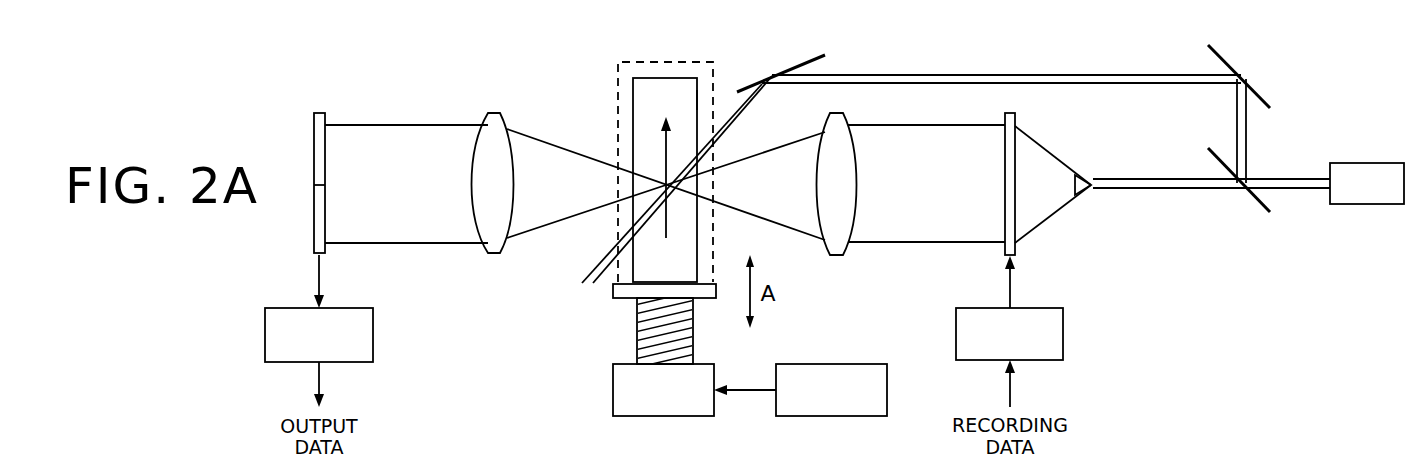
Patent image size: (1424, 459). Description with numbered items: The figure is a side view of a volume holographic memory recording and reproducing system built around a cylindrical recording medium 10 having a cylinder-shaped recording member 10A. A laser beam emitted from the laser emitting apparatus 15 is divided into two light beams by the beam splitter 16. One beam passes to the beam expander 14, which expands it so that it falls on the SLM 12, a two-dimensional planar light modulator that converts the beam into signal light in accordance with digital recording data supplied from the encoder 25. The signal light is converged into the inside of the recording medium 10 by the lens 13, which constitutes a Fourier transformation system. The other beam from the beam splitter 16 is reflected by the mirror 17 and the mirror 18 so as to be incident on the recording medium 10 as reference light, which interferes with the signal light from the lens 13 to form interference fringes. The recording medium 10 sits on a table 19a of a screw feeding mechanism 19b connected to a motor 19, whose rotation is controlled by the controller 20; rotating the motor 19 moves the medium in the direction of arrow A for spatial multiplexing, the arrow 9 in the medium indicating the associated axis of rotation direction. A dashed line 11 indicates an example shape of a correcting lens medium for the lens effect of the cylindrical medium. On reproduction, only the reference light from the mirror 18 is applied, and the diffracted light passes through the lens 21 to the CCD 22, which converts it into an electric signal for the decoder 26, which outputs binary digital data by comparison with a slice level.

The arrow indicating rotation/movement direction of recording medium 9 is at (664, 148).
The recording medium 10 is at (676, 77).
The recording member 10A is at (696, 98).
The dashed line 11 is at (636, 61).
The SLM 12 is at (1017, 113).
The lens 13 is at (838, 257).
The beam expander 14 is at (1093, 190).
The laser emitting apparatus 15 is at (1365, 206).
The beam splitter 16 is at (1260, 205).
The mirror 17 is at (1263, 92).
The mirror 18 is at (812, 56).
The motor 19 is at (659, 417).
The table 19a is at (613, 292).
The screw feeding mechanism 19b is at (637, 340).
The controller 20 is at (828, 417).
The lens 21 is at (493, 112).
The CCD 22 is at (319, 112).
The encoder 25 is at (1063, 335).
The decoder 26 is at (373, 337).